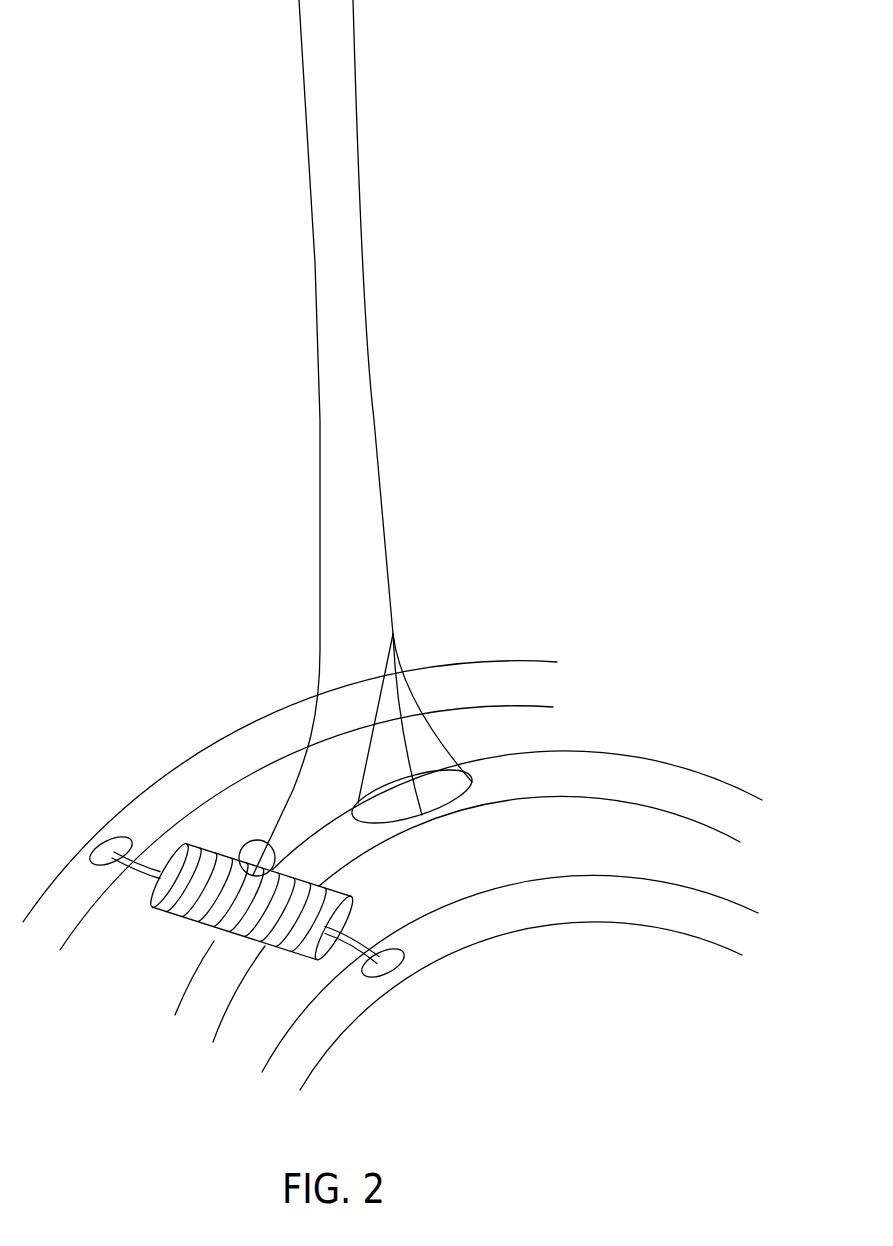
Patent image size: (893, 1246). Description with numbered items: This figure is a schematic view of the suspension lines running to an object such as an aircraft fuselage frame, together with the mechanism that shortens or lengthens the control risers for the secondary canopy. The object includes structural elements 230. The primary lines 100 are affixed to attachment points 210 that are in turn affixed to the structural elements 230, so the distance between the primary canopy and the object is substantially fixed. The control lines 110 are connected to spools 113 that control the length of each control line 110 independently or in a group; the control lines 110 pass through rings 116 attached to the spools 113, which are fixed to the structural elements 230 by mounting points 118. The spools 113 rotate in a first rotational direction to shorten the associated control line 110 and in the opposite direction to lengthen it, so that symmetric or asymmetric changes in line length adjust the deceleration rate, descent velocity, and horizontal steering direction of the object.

The primary lines 100 is at (372, 370).
The control lines 110 is at (315, 264).
The spools 113 is at (178, 925).
The rings 116 is at (241, 846).
The mounting points 118 is at (408, 977).
The attachment points 210 is at (450, 802).
The structural elements 230 is at (743, 792).